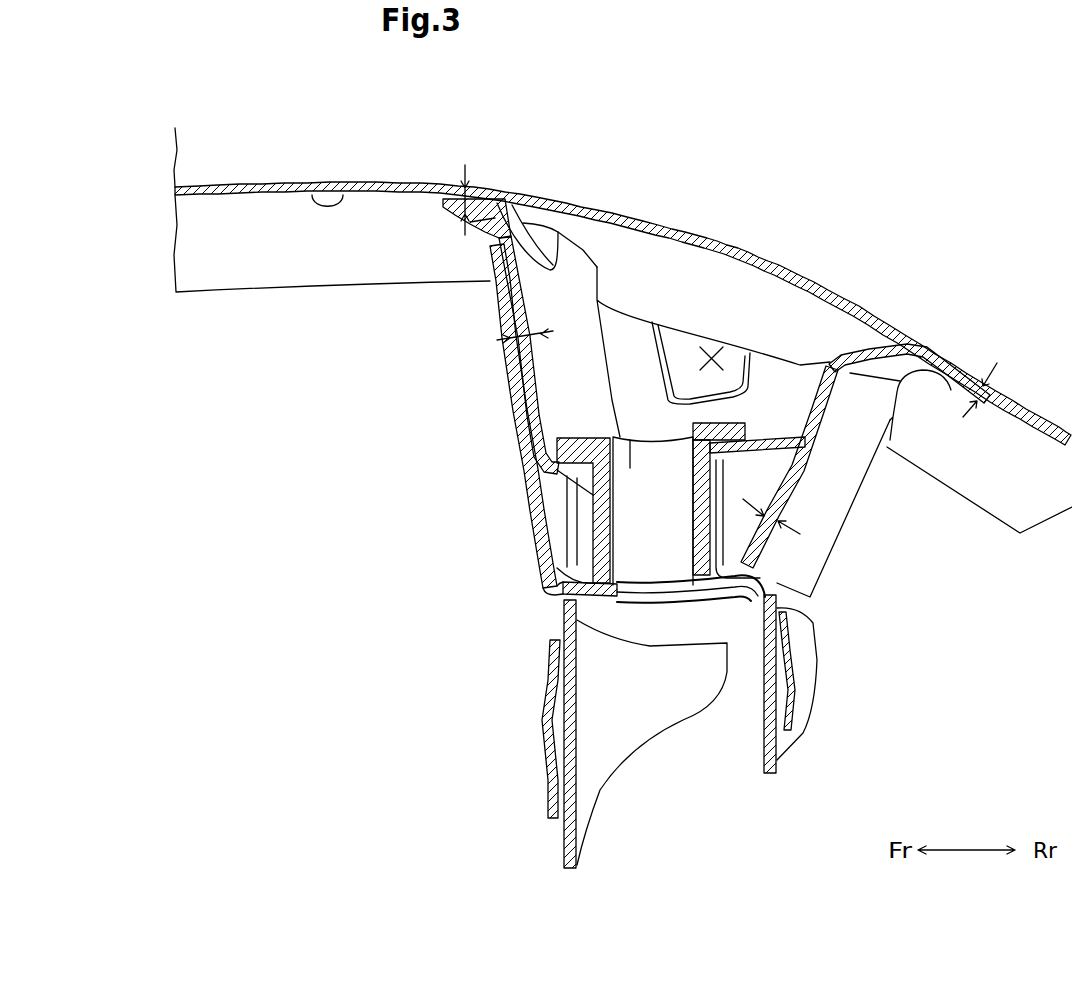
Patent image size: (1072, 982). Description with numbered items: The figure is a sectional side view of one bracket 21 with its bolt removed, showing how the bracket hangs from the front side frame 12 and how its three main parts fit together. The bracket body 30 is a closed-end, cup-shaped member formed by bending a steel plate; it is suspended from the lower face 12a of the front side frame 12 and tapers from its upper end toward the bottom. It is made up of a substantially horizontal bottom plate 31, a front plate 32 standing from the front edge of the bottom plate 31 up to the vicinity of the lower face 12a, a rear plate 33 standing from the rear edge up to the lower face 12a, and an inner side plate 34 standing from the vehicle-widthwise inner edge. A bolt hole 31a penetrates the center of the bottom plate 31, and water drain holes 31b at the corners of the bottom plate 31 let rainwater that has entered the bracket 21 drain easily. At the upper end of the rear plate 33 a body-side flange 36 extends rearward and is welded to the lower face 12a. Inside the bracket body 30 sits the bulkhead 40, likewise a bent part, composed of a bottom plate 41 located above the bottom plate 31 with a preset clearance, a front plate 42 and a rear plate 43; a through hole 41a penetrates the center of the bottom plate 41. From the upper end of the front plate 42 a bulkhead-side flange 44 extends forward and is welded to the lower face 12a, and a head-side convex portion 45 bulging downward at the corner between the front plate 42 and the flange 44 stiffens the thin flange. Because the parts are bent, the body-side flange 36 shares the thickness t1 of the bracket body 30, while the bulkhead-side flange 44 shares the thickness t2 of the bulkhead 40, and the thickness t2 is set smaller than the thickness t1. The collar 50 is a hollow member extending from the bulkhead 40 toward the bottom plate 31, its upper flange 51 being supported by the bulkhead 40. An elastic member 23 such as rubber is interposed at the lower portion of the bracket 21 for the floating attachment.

The front side frame 12 is at (230, 272).
The lower face of the front side frame 12a is at (322, 205).
The bulkhead-side flange 44 is at (430, 194).
The thickness of the bulkhead t2 is at (504, 244).
The head-side convex portion 45 is at (530, 232).
The front plate of the bulkhead 42 is at (575, 271).
The bulkhead 40 is at (600, 280).
The collar 50 is at (632, 440).
The flange of the collar 51 is at (747, 420).
The thickness of the bracket body t1 is at (870, 432).
The body-side flange 36 is at (951, 390).
The inner side plate 34 is at (631, 405).
The bracket body 30 is at (512, 456).
The front plate of the bracket body 32 is at (528, 513).
The bottom plate of the bracket body 31 is at (540, 545).
The bolt hole 31a is at (647, 595).
The water drain hole 31b is at (540, 587).
The through hole of the bulkhead bottom plate 41a is at (690, 458).
The rear plate of the bulkhead 43 is at (806, 452).
The bottom plate of the bulkhead 41 is at (800, 476).
The rear plate of the bracket body 33 is at (810, 549).
The bracket 21 is at (828, 608).
The elastic member 23 is at (597, 735).